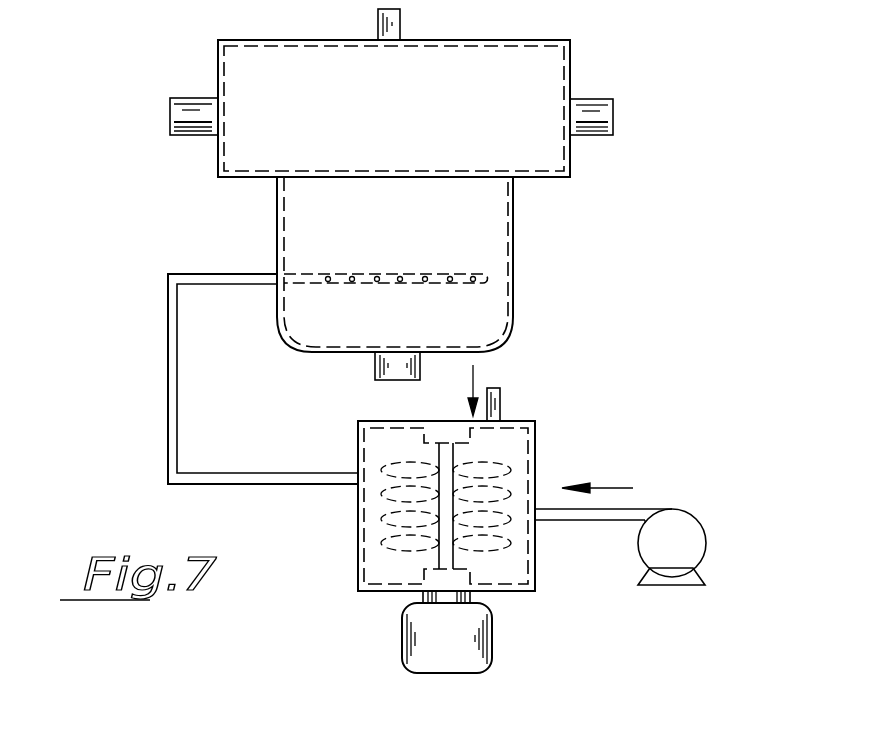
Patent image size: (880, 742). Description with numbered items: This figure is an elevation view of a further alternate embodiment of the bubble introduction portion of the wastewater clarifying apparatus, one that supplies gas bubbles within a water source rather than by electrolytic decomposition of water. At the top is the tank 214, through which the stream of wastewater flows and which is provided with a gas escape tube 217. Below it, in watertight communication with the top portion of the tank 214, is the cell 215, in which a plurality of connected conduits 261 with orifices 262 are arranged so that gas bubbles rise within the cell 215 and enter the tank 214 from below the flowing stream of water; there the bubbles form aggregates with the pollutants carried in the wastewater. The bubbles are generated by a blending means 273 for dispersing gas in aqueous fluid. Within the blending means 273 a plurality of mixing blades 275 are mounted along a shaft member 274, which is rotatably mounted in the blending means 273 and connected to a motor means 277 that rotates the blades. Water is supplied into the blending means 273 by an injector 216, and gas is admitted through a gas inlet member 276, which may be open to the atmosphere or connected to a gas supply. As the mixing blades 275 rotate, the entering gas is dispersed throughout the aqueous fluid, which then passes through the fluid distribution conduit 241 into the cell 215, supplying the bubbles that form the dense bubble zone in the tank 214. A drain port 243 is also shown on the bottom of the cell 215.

The tank 214 is at (572, 58).
The cell 215 is at (515, 212).
The injector 216 is at (700, 528).
The gas escape tube 217 is at (401, 14).
The fluid distribution conduit 241 is at (168, 377).
The drain port 243 is at (375, 380).
The connected conduits 261 is at (490, 272).
The orifices 262 is at (450, 284).
The blending means 273 is at (536, 455).
The shaft member 274 is at (455, 560).
The mixing blades 275 is at (383, 552).
The gas inlet member 276 is at (501, 395).
The motor means 277 is at (493, 630).